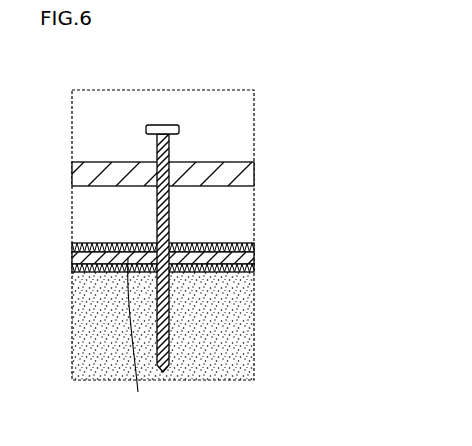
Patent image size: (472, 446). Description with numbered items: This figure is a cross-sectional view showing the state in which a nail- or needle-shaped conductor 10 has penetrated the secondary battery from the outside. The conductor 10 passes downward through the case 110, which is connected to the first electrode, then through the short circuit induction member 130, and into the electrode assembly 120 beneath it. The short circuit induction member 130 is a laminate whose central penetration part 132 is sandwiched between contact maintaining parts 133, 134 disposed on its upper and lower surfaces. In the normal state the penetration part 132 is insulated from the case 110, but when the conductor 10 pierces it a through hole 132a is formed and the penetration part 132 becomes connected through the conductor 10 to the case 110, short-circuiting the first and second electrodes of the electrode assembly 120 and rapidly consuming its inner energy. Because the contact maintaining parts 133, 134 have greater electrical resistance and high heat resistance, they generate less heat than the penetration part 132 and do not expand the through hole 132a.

The conductor 10 is at (163, 124).
The case 110 is at (240, 181).
The electrode assembly 120 is at (248, 332).
The short circuit induction member 130 is at (195, 248).
The penetration part 132 is at (247, 258).
The through hole 132a is at (134, 338).
The contact maintaining part 133 is at (247, 247).
The contact maintaining part 134 is at (247, 268).